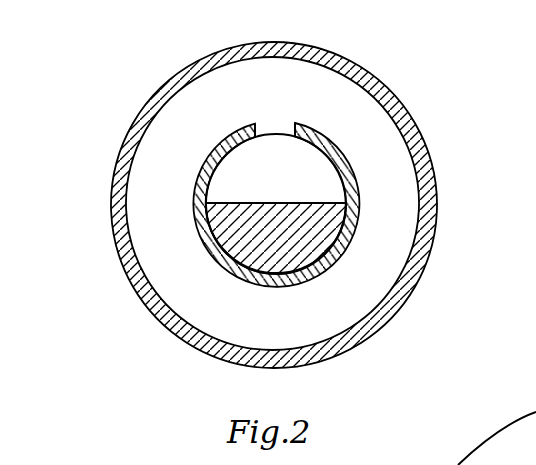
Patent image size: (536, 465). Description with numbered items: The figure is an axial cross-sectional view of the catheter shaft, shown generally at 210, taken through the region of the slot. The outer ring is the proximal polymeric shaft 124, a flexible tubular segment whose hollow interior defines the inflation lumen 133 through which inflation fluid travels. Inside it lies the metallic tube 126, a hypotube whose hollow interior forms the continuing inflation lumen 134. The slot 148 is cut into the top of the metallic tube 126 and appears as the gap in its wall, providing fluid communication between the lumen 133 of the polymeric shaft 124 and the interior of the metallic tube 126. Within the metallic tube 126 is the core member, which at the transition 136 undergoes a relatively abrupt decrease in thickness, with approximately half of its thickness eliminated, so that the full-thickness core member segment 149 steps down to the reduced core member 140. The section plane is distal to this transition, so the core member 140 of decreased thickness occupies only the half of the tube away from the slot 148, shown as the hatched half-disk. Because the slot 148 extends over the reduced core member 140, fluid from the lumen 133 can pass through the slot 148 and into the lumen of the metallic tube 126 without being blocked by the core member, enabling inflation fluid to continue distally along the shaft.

The cross-section 210 is at (403, 67).
The proximal polymeric shaft 124 is at (142, 277).
The inflation lumen of tubular segment 133 is at (218, 313).
The transition 136 is at (233, 180).
The metallic tube 126 is at (300, 286).
The slot 148 is at (272, 127).
The core member segment 149 is at (300, 168).
The inflation lumen of metallic tube 134 is at (310, 193).
The core member of decreased thickness 140 is at (317, 235).